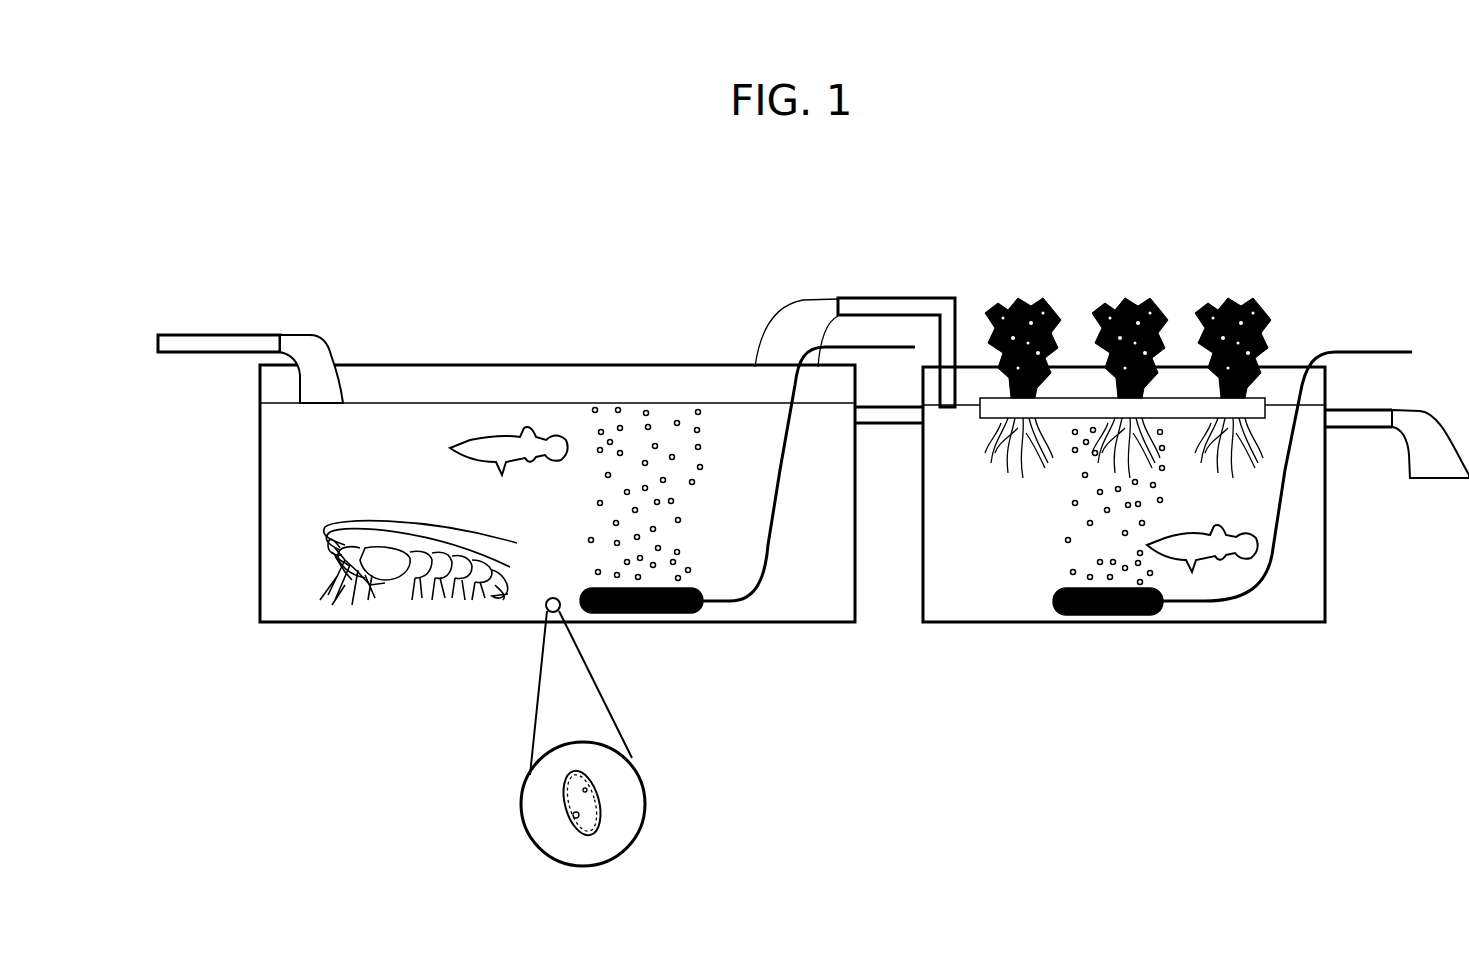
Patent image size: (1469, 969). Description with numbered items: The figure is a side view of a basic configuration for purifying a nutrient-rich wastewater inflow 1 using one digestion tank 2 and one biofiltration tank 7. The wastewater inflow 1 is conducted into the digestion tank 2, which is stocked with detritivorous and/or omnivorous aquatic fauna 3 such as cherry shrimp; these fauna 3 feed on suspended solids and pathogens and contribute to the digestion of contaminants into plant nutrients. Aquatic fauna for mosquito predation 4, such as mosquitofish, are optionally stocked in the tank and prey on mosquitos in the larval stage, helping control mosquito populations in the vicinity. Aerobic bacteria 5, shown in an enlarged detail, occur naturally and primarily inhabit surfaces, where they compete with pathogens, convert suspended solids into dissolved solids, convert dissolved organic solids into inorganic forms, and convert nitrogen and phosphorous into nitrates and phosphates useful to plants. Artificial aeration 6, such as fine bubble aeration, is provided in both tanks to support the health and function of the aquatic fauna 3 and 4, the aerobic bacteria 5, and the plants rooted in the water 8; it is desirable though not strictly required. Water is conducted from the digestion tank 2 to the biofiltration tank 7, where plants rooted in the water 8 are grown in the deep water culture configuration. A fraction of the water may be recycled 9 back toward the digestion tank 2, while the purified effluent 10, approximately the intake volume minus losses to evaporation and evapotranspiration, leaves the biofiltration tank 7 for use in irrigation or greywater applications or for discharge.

The nutrient-rich wastewater inflow 1 is at (194, 370).
The digestion tank 2 is at (240, 612).
The detritivorous and/or omnivorous aquatic fauna 3 is at (352, 629).
The aquatic fauna for mosquito predation 4 is at (587, 467).
The aerobic bacteria 5 is at (619, 808).
The artificial aeration 6 is at (1033, 614).
The biofiltration tank 7 is at (1299, 350).
The plants rooted in the water 8 is at (1047, 279).
The recycled water fraction 9 is at (842, 281).
The purified effluent 10 is at (1433, 498).